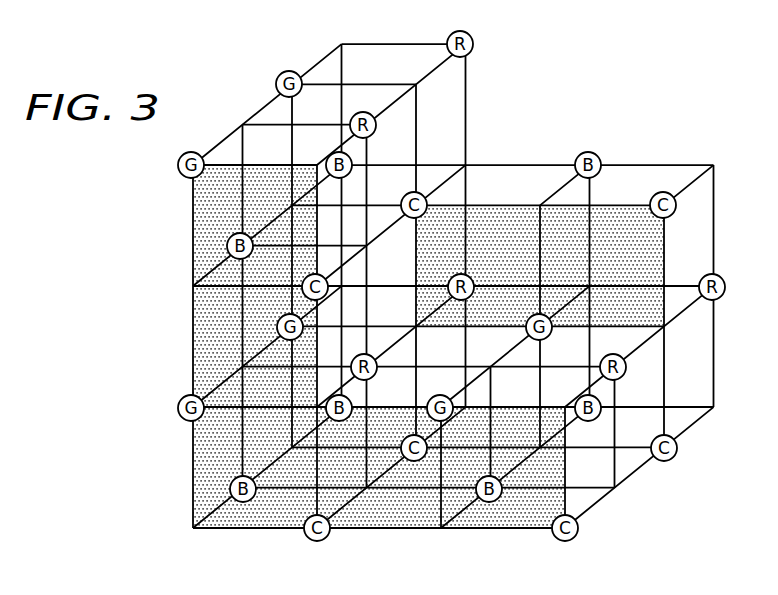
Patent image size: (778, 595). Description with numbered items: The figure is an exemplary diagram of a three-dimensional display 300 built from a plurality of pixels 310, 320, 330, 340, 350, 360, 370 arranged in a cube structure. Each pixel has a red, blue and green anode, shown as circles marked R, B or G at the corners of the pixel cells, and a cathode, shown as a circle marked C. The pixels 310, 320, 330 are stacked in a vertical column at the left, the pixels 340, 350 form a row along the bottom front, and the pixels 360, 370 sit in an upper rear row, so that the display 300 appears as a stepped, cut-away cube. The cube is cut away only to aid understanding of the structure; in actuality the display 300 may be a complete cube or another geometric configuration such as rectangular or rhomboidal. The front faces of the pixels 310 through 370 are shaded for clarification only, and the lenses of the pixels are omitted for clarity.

The three-dimensional display 300 is at (240, 77).
The pixel 310 is at (190, 471).
The pixel 320 is at (190, 341).
The pixel 330 is at (190, 221).
The pixel 340 is at (393, 526).
The pixel 350 is at (513, 522).
The pixel 360 is at (512, 168).
The pixel 370 is at (653, 168).